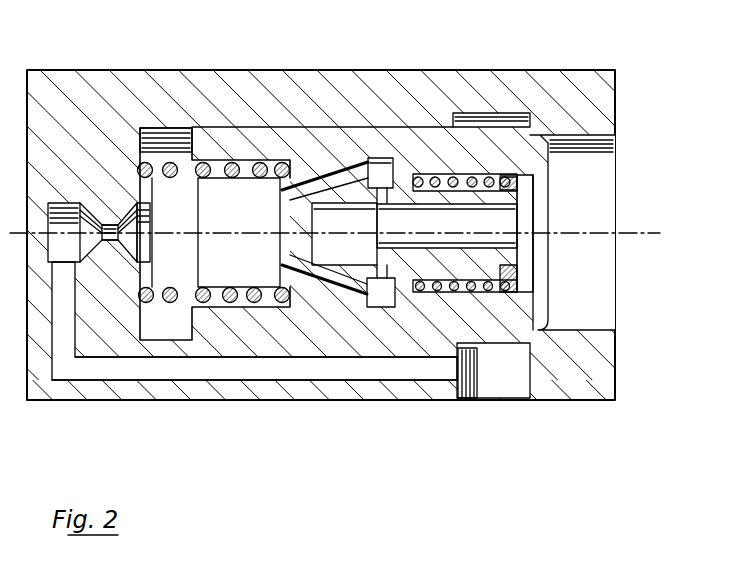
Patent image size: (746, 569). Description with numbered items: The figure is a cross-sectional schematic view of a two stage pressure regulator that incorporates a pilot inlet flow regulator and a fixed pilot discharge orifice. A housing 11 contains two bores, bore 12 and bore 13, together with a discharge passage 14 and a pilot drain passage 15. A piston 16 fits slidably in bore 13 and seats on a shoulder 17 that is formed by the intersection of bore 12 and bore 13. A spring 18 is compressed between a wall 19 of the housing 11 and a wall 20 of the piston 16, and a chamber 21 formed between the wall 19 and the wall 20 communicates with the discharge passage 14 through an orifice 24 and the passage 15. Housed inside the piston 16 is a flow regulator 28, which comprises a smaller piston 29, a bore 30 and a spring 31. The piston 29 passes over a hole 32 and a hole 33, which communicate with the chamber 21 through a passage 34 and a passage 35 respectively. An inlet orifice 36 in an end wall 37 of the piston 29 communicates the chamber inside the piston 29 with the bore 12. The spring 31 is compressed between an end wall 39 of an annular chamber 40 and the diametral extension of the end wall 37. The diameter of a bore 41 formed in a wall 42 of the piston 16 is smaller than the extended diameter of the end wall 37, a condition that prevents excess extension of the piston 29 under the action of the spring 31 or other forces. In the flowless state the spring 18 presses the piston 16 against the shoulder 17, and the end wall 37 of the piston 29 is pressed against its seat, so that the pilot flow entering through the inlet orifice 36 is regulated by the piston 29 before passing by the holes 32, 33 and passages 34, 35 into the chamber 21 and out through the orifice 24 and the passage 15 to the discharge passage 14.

The housing 11 is at (583, 70).
The bore 12 is at (562, 318).
The bore 13 is at (252, 345).
The discharge passage 14 is at (505, 370).
The pilot drain passage 15 is at (410, 390).
The piston 16 is at (556, 152).
The shoulder 17 is at (557, 332).
The spring 18 is at (232, 162).
The wall 19 is at (150, 127).
The wall 20 is at (270, 162).
The chamber 21 is at (246, 223).
The orifice 24 is at (108, 262).
The flow regulator 28 is at (548, 221).
The piston 29 is at (471, 178).
The bore 30 is at (343, 213).
The spring 31 is at (522, 175).
The hole 32 is at (385, 308).
The hole 33 is at (385, 158).
The passage 34 is at (335, 300).
The passage 35 is at (300, 185).
The inlet orifice 36 is at (550, 236).
The end wall 37 is at (553, 254).
The end wall 39 is at (437, 293).
The annular chamber 40 is at (480, 293).
The bore 41 is at (553, 204).
The wall 42 is at (553, 188).